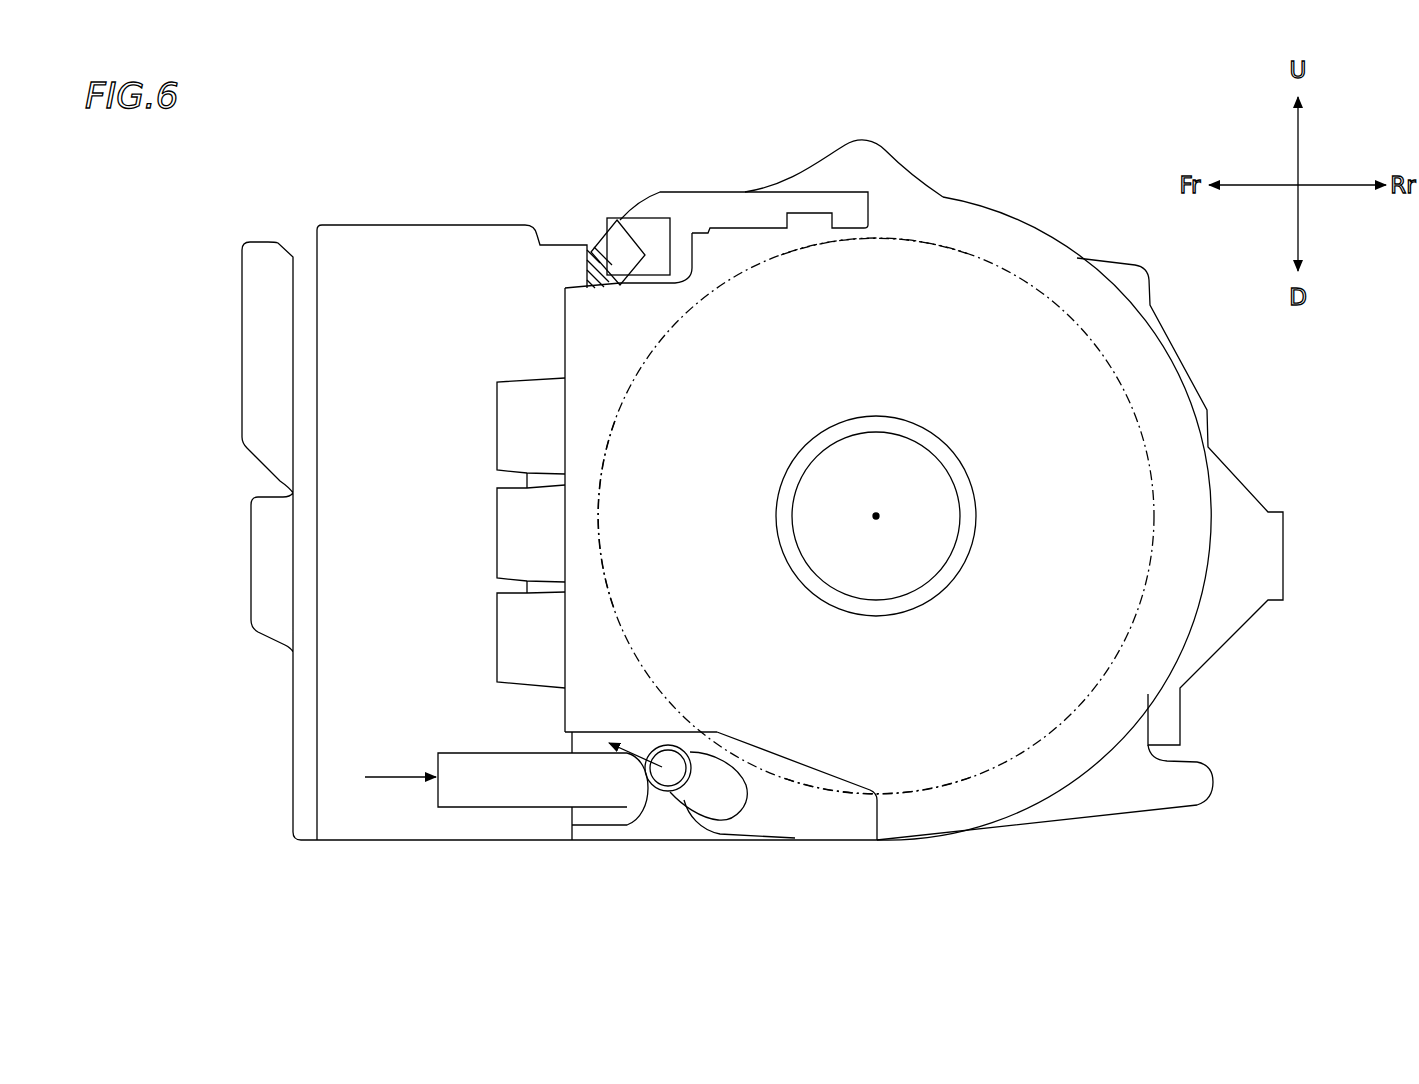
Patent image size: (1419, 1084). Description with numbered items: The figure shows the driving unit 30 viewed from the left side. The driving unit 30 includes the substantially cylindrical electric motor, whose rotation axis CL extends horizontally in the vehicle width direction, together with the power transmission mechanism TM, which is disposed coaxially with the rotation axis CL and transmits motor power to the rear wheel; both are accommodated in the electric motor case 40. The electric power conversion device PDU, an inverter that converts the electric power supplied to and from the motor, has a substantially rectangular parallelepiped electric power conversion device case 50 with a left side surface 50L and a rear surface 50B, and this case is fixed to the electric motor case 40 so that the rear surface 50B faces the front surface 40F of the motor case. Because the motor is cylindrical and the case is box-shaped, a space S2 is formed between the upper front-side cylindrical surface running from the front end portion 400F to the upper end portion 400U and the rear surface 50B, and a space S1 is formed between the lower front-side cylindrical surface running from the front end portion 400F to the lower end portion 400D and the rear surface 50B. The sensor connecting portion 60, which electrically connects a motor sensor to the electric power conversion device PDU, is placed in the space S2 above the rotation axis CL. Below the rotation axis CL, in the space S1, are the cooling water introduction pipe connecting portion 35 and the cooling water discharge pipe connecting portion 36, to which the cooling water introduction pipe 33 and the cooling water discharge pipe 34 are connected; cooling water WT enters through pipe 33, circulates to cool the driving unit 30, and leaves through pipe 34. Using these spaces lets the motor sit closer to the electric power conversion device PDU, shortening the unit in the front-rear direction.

The driving unit 30 is at (1018, 176).
The cooling water introduction pipe 33 is at (465, 793).
The cooling water discharge pipe 34 is at (705, 800).
The cooling water introduction pipe connecting portion 35 is at (623, 797).
The cooling water discharge pipe connecting portion 36 is at (735, 812).
The electric motor case 40 is at (1077, 258).
The front surface of the electric motor case 40F is at (563, 325).
The electric power conversion device case 50 is at (418, 252).
The rear surface of the electric power conversion device case 50B is at (597, 242).
The left side surface of the electric power conversion device case 50L is at (373, 512).
The sensor connecting portion 60 is at (650, 240).
The upper end portion of the electric motor 400U is at (882, 235).
The front end portion of the electric motor 400F is at (592, 508).
The lower end portion of the electric motor 400D is at (880, 800).
The electric power conversion device PDU is at (337, 220).
The power transmission mechanism TM is at (997, 262).
The rotation axis CL is at (877, 514).
The space S1 is at (640, 712).
The space S2 is at (705, 268).
The cooling water WT is at (704, 690).